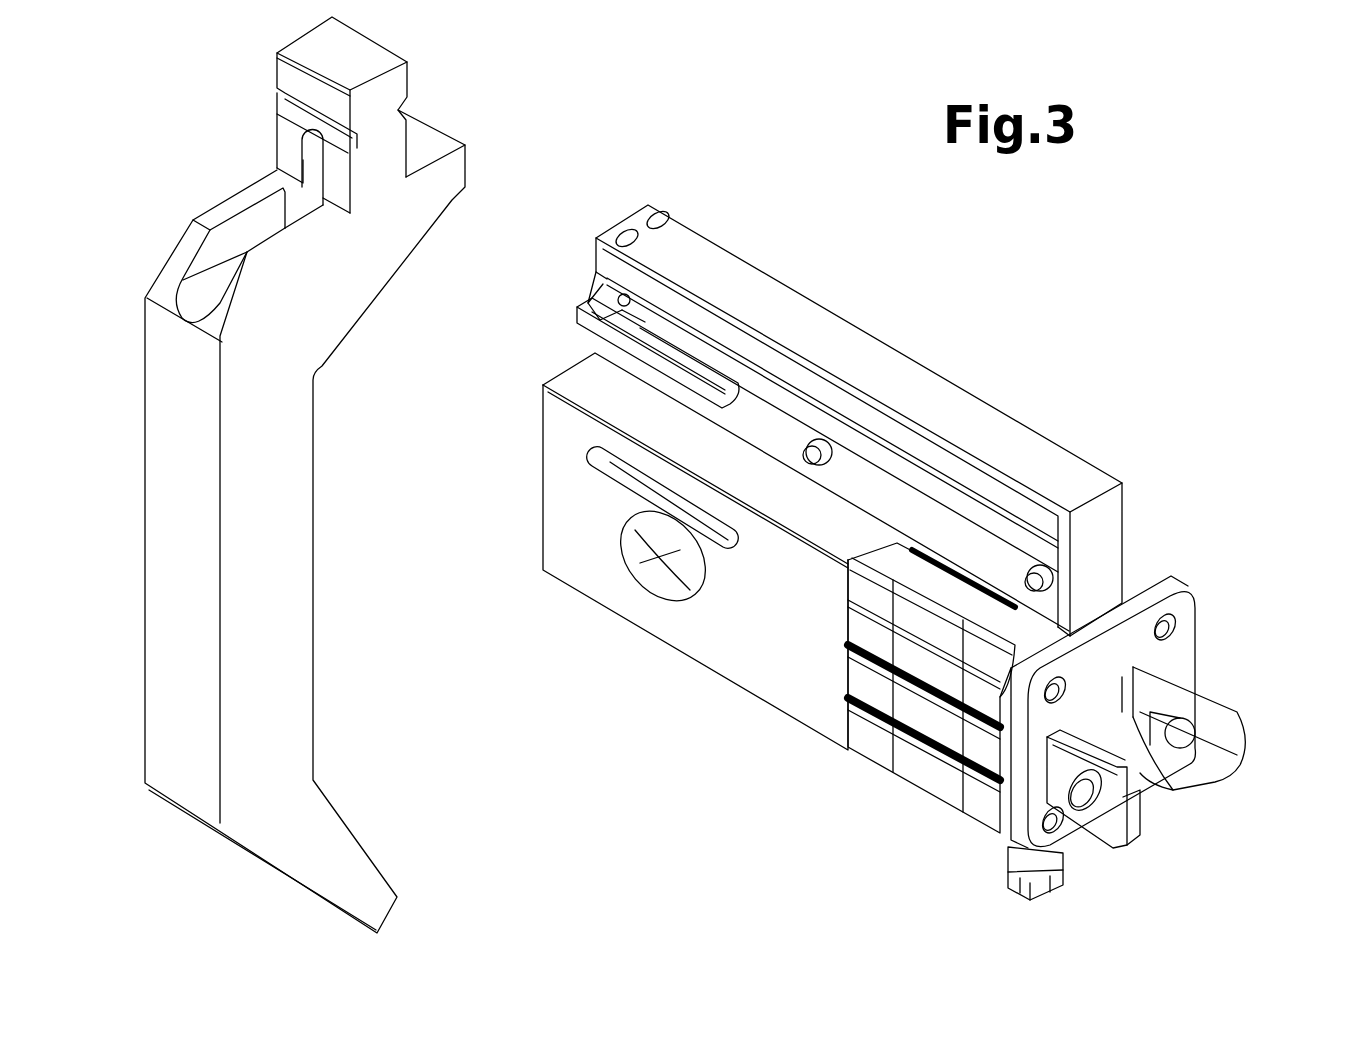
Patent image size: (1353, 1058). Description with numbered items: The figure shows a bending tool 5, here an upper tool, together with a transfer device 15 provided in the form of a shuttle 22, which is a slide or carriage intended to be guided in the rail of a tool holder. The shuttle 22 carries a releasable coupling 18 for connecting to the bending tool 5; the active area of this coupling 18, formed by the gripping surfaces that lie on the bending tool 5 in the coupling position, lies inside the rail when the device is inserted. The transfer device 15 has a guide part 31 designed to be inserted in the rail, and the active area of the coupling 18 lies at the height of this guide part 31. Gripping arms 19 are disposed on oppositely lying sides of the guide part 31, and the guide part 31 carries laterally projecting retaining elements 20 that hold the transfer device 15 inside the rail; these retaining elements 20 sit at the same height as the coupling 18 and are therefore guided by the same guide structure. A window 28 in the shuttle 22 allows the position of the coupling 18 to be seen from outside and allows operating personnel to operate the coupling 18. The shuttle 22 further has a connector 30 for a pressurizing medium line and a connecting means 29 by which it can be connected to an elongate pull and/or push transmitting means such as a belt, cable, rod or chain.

The bending tool 5 is at (280, 565).
The transfer device 15 is at (959, 287).
The releasable coupling 18 is at (577, 294).
The gripping arms 19 is at (587, 323).
The retaining elements 20 is at (806, 462).
The shuttle 22 is at (1039, 389).
The window 28 is at (627, 573).
The connecting means 29 is at (1181, 740).
The connector 30 is at (1003, 857).
The guide part 31 is at (1140, 470).